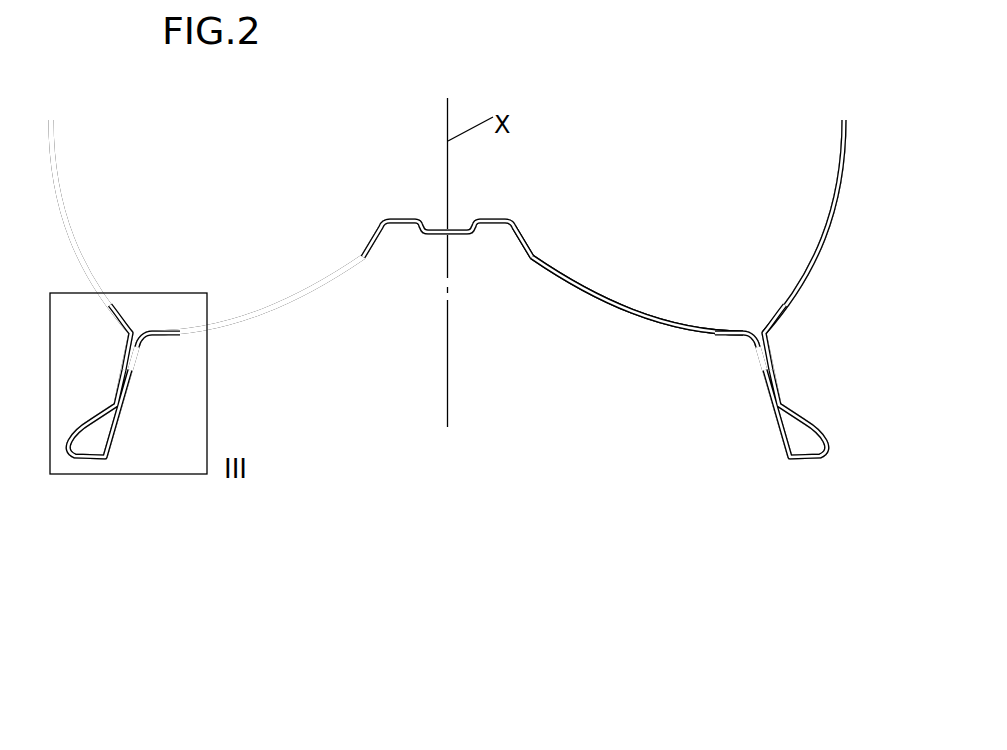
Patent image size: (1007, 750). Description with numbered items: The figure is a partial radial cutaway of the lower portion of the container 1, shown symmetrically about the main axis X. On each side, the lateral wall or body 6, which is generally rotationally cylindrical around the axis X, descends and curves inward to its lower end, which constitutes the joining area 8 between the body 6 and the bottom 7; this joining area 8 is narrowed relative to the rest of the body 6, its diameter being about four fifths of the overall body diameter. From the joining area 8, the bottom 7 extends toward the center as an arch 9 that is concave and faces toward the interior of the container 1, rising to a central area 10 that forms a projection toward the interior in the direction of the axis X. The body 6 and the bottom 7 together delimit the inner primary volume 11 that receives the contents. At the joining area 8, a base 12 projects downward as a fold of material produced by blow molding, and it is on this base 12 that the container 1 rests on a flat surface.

The container 1 is at (851, 121).
The body 6 is at (840, 192).
The bottom 7 is at (609, 306).
The joining area 8 is at (129, 338).
The arch 9 is at (581, 292).
The central area 10 is at (506, 217).
The inner primary volume 11 is at (297, 177).
The base 12 is at (114, 398).